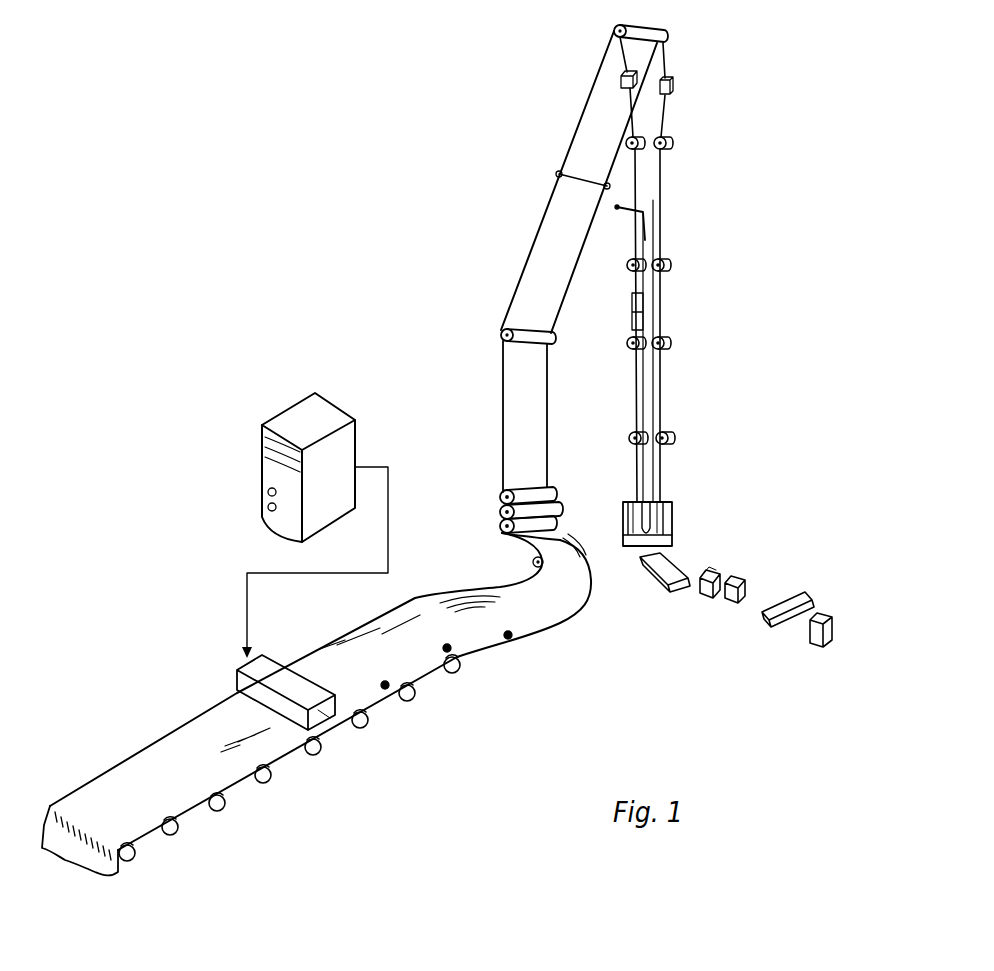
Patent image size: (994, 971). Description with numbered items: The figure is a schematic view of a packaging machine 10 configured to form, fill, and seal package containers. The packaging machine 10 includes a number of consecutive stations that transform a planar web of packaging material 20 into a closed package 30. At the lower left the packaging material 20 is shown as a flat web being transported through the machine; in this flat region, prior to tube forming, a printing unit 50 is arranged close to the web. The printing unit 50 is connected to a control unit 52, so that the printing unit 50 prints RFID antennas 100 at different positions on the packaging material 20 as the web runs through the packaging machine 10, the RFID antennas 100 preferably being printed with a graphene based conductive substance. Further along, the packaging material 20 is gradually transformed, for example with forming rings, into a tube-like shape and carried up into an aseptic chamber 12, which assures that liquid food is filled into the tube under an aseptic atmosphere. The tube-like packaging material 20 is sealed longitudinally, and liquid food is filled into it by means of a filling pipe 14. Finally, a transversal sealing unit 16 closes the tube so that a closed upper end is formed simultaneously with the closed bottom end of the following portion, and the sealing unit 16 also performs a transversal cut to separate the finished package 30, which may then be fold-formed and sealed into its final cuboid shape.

The packaging machine 10 is at (418, 342).
The aseptic chamber 12 is at (700, 195).
The filling pipe 14 is at (617, 208).
The transversal sealing unit 16 is at (660, 518).
The web of packaging material 20 is at (567, 596).
The package 30 is at (772, 618).
The printing unit 50 is at (333, 720).
The control unit 52 is at (288, 405).
The RFID antennas 100 is at (385, 688).